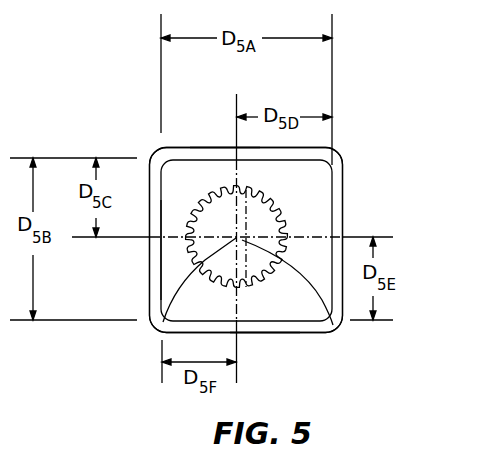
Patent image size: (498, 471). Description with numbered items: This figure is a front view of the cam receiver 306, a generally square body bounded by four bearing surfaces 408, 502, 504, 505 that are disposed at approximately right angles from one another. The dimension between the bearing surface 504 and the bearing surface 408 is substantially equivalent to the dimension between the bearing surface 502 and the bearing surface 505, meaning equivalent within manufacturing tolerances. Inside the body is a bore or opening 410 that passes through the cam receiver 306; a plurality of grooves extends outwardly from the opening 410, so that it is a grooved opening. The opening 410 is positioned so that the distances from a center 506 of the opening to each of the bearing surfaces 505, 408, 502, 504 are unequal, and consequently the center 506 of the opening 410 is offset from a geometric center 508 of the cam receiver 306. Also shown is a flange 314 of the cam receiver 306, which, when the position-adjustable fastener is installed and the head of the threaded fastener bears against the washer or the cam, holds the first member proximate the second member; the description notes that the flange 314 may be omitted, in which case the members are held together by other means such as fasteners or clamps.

The cam receiver 306 is at (130, 100).
The flange 314 is at (332, 218).
The bearing surface 408 is at (342, 197).
The opening 410 is at (257, 213).
The bearing surface 502 is at (266, 321).
The bearing surface 504 is at (161, 272).
The bearing surface 505 is at (213, 158).
The center of the opening 506 is at (163, 322).
The geometric center 508 is at (333, 325).